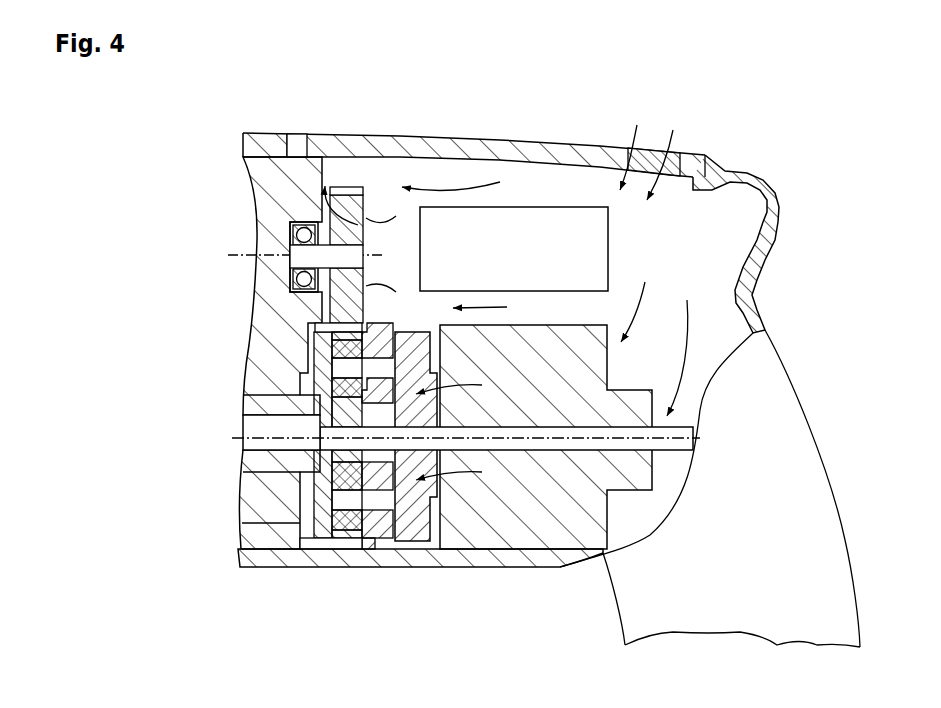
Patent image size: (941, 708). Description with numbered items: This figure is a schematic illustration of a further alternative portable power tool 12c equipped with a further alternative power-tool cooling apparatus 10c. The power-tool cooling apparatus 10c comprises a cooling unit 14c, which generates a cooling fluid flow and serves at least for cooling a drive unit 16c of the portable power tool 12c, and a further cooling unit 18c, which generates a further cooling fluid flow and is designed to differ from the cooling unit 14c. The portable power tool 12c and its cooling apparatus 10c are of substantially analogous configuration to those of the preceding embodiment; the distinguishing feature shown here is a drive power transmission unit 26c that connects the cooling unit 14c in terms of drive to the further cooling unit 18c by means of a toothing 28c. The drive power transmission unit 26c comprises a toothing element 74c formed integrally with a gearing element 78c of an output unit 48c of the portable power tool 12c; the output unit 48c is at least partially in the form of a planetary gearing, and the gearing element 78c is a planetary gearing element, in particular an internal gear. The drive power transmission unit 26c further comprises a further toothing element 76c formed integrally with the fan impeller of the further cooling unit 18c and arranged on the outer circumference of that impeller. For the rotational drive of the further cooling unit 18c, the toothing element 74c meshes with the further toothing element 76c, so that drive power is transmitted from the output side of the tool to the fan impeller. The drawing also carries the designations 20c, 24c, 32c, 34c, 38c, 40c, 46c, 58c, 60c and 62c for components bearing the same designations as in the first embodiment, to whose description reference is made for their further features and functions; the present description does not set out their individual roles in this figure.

The power-tool cooling apparatus 10c is at (441, 123).
The portable power tool 12c is at (210, 132).
The cooling unit 14c is at (367, 582).
The drive unit 16c is at (550, 592).
The further cooling unit 18c is at (402, 157).
The drive unit / motor 20c is at (412, 545).
The drive shaft 24c is at (232, 436).
The drive power transmission unit 26c is at (350, 128).
The toothing 28c is at (326, 177).
The fan axis 32c is at (228, 255).
The electronics unit 34c is at (557, 222).
The housing cover 38c is at (248, 126).
The handle 40c is at (818, 528).
The fastening element 46c is at (289, 147).
The output unit 48c is at (213, 488).
The output shaft 58c is at (532, 444).
The housing wall section 60c is at (695, 135).
The air outlet opening 62c is at (682, 168).
The toothing element 74c is at (340, 549).
The further toothing element 76c is at (360, 157).
The gearing element 78c is at (300, 549).